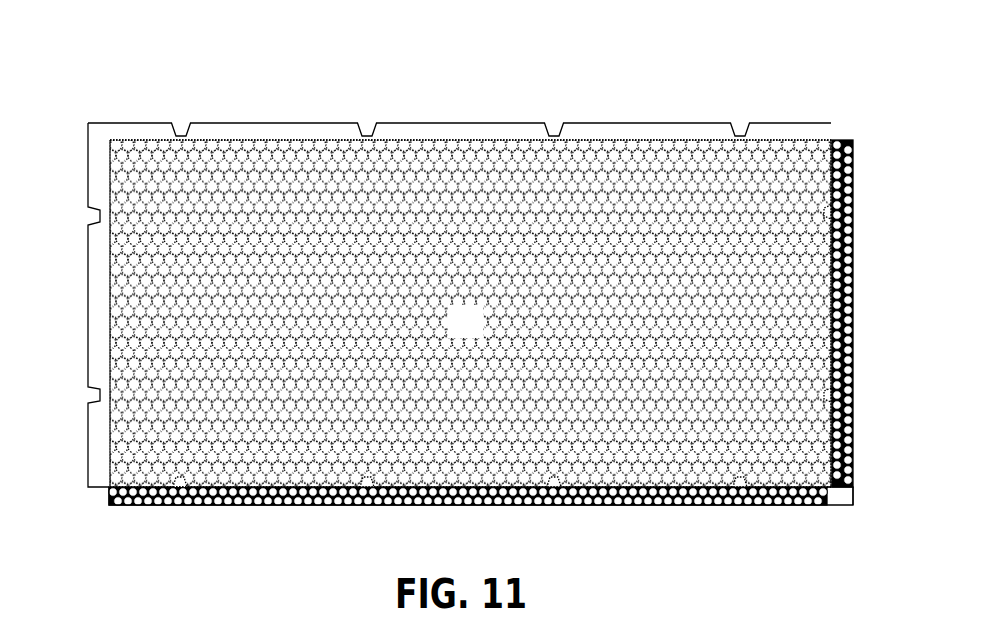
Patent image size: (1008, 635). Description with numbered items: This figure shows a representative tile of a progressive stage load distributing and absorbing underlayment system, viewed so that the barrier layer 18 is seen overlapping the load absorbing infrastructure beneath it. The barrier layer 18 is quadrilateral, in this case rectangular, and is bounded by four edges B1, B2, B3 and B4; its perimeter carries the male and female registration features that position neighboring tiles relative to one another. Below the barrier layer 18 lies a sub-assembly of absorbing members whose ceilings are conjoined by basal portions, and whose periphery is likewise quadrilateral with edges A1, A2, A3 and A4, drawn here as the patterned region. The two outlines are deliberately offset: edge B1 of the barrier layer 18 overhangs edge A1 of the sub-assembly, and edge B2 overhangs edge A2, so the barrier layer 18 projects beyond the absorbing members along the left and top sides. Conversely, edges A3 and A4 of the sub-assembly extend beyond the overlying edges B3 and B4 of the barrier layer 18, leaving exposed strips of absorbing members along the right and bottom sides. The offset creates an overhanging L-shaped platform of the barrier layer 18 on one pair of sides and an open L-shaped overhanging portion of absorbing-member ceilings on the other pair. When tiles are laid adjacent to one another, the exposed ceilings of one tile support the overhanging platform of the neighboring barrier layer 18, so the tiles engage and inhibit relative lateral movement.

The barrier layer 18 is at (480, 333).
The edge A1 of sub-assembly of absorbing members A1 is at (122, 352).
The edge A2 of sub-assembly of absorbing members A2 is at (608, 142).
The edge A3 of sub-assembly of absorbing members A3 is at (855, 357).
The edge A4 of sub-assembly of absorbing members A4 is at (323, 507).
The edge B1 of barrier layer B1 is at (100, 302).
The edge B2 of barrier layer B2 is at (428, 134).
The edge B3 of barrier layer B3 is at (843, 290).
The edge B4 of barrier layer B4 is at (660, 507).